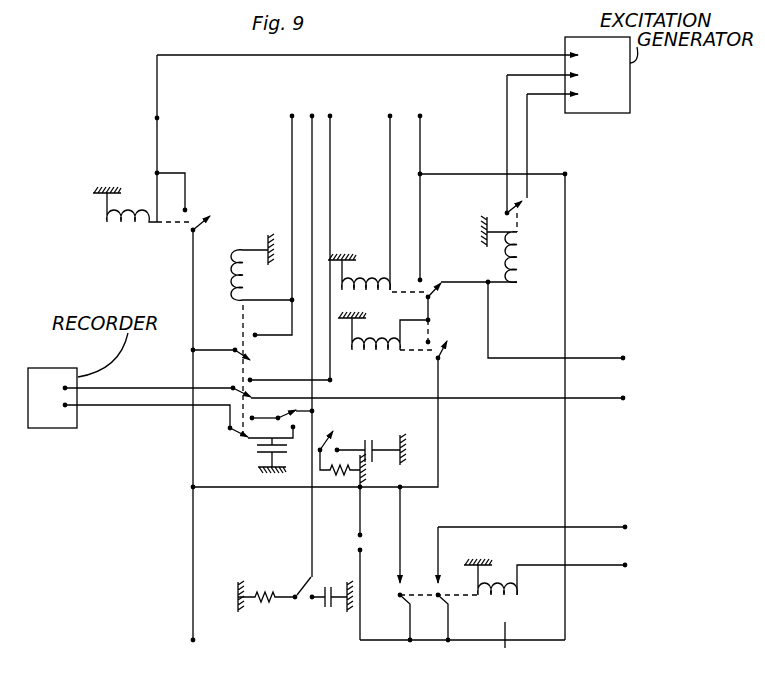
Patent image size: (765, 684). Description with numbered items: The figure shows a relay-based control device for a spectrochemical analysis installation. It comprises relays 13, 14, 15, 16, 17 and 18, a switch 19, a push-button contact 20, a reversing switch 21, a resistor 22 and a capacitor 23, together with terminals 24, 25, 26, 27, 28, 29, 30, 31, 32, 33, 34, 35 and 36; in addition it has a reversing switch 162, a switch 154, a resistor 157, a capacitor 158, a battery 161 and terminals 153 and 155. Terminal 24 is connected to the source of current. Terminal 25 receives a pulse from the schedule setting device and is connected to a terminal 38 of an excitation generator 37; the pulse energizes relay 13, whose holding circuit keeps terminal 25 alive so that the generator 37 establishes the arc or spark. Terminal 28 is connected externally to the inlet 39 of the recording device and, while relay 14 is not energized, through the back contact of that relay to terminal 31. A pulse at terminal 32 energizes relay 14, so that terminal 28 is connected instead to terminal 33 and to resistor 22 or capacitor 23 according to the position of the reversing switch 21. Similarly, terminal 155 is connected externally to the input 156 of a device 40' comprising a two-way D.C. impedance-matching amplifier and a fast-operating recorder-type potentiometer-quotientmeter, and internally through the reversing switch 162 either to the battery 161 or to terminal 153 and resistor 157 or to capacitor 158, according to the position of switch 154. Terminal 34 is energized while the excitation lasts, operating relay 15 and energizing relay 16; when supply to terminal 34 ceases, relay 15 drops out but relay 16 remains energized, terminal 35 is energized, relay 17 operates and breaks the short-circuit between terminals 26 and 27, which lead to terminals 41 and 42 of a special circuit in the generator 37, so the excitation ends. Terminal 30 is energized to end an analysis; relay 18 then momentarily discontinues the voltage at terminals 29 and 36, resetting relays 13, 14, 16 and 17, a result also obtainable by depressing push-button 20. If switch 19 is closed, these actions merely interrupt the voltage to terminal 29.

The relay 13 is at (108, 226).
The relay 14 is at (244, 249).
The relay 15 is at (365, 288).
The relay 16 is at (393, 355).
The relay 17 is at (520, 281).
The relay 18 is at (519, 597).
The switch 19 is at (346, 543).
The push-button contact 20 is at (511, 647).
The reversing switch 21 is at (337, 434).
The resistor 22 is at (330, 476).
The capacitor 23 is at (370, 458).
The terminal 24 is at (422, 116).
The terminal 25 is at (158, 118).
The terminal 26 is at (507, 117).
The terminal 27 is at (529, 118).
The terminal 28 is at (116, 388).
The terminal 29 is at (627, 526).
The terminal 30 is at (627, 565).
The terminal 31 is at (455, 395).
The terminal 32 is at (293, 116).
The terminal 33 is at (331, 116).
The terminal 34 is at (391, 116).
The terminal 35 is at (573, 320).
The terminal 36 is at (190, 643).
The excitation generator 37 is at (608, 113).
The terminal 38 is at (381, 55).
The inlet 39 is at (68, 386).
The device 40' is at (52, 382).
The terminal 41 is at (566, 94).
The terminal 42 is at (556, 75).
The terminal 153 is at (312, 114).
The switch 154 is at (302, 586).
The terminal 155 is at (148, 409).
The input 156 is at (64, 410).
The resistor 157 is at (268, 601).
The capacitor 158 is at (329, 608).
The battery 161 is at (256, 448).
The reversing switch 162 is at (285, 410).